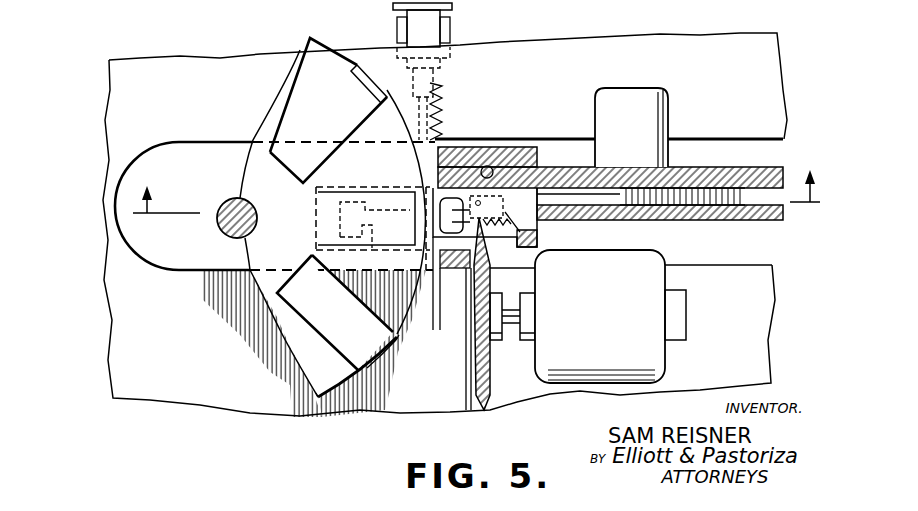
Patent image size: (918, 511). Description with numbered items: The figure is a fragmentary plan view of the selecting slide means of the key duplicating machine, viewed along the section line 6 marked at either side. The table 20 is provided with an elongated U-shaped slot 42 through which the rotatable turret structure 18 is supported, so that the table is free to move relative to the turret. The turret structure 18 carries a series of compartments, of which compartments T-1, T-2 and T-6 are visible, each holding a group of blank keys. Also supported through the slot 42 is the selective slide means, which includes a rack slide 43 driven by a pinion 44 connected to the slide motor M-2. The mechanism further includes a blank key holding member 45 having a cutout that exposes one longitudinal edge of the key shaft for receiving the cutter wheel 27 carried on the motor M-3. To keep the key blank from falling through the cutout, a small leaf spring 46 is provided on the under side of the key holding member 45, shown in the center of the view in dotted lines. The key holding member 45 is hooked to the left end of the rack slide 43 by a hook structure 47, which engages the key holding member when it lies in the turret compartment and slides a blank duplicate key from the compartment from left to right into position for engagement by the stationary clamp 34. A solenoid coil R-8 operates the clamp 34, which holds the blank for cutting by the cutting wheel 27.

The table 20 is at (530, 50).
The turret structure 18 is at (311, 352).
The U-shaped slot 42 is at (184, 143).
The section line 6- 6 is at (478, 182).
The compartment T-2 is at (318, 113).
The compartment T-6 is at (343, 338).
The compartment T-1 is at (322, 213).
The solenoid coil R-8 is at (433, 28).
The stationary clamp 34 is at (463, 157).
The rack slide 43 is at (697, 166).
The pinion 44 is at (635, 200).
The blank key holding member 45 is at (457, 234).
The leaf spring 46 is at (493, 214).
The hook structure 47 is at (540, 196).
The cutting wheel 27 is at (480, 362).
The motor M-3 is at (588, 316).
The slide motor M-2 is at (631, 127).